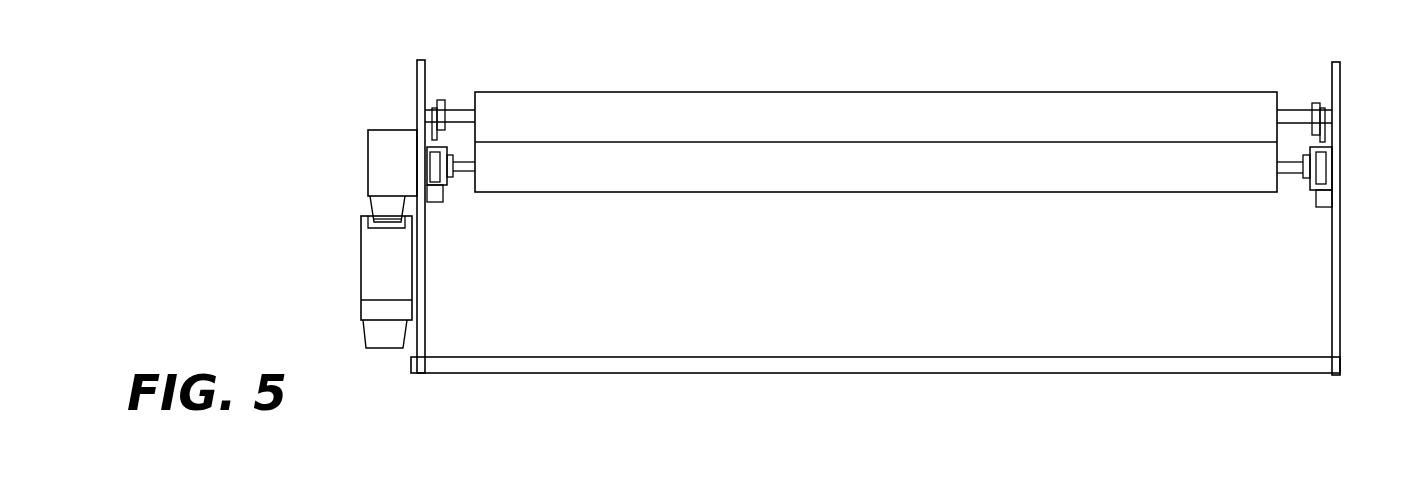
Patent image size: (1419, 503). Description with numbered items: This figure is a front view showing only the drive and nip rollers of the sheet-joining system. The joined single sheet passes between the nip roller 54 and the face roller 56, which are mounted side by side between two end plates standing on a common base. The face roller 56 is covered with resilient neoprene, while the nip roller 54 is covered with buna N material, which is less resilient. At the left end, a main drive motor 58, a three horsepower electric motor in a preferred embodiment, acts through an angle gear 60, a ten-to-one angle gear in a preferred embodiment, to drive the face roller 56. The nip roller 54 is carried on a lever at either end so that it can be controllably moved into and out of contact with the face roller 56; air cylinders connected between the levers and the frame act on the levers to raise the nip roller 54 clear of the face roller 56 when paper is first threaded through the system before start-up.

The nip roller 54 is at (860, 84).
The face roller 56 is at (862, 210).
The main drive motor 58 is at (383, 362).
The angle gear 60 is at (388, 115).